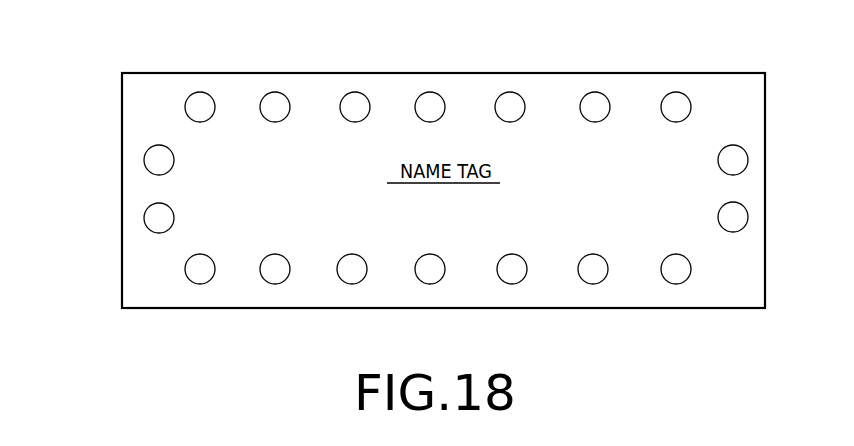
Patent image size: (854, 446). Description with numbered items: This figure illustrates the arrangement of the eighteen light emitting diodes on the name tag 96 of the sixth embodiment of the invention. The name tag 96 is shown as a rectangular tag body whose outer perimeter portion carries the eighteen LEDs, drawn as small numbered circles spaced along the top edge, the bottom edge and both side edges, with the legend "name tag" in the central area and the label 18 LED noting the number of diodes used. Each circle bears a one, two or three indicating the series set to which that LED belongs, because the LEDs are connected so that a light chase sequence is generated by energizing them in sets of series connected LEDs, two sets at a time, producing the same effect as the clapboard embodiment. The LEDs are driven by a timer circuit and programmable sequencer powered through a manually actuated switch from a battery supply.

The name tag 96 is at (511, 73).
The LED 18 is at (270, 192).